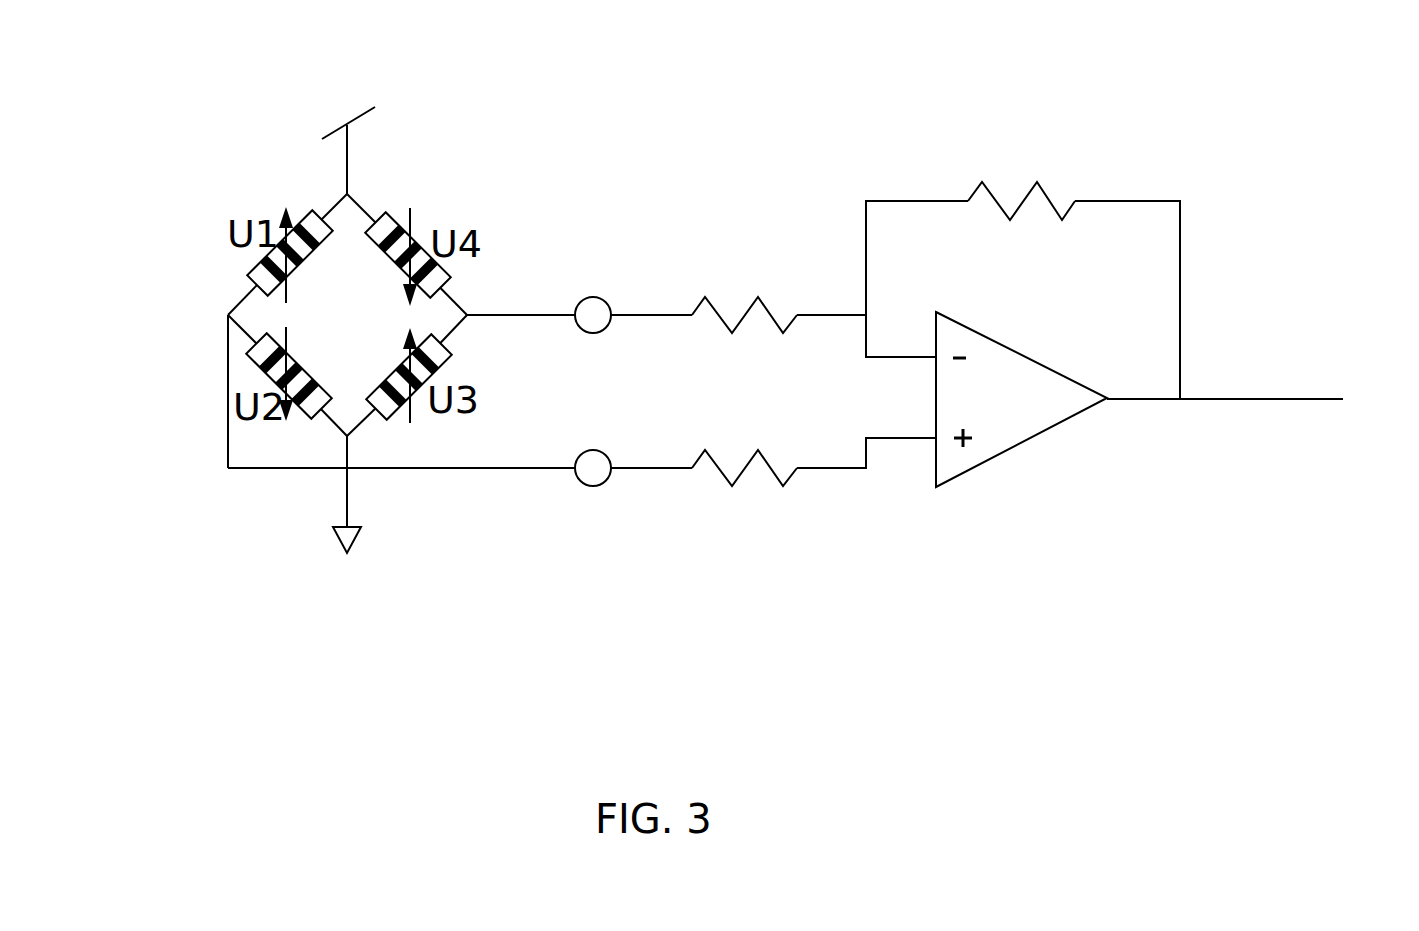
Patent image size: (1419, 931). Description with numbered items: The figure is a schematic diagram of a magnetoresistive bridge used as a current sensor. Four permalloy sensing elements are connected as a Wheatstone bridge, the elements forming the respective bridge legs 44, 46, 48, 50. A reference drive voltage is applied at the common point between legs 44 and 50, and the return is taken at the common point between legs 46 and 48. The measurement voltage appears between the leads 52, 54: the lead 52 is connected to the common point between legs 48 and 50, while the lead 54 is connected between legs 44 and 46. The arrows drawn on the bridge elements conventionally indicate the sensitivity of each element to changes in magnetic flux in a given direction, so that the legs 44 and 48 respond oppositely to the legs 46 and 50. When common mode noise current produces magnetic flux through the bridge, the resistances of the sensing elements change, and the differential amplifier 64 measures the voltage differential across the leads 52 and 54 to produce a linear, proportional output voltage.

The bridge leg 44 is at (242, 300).
The bridge leg 46 is at (240, 330).
The bridge leg 48 is at (362, 425).
The bridge leg 50 is at (365, 198).
The lead 52 is at (553, 315).
The lead 54 is at (490, 468).
The differential amplifier 64 is at (1028, 440).